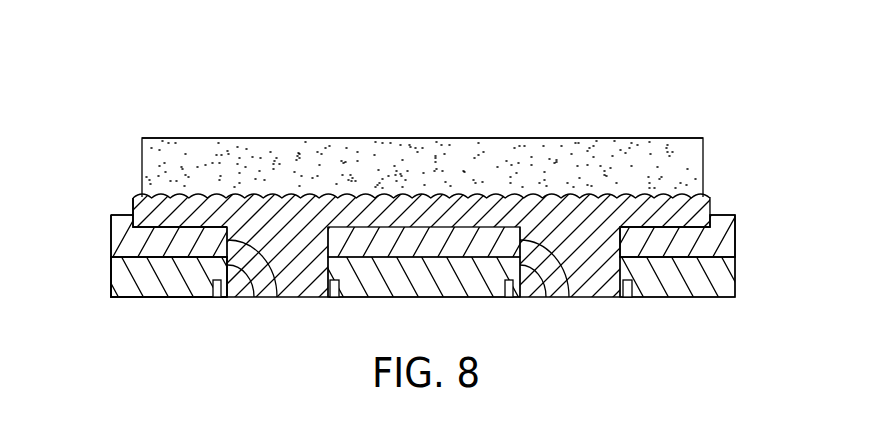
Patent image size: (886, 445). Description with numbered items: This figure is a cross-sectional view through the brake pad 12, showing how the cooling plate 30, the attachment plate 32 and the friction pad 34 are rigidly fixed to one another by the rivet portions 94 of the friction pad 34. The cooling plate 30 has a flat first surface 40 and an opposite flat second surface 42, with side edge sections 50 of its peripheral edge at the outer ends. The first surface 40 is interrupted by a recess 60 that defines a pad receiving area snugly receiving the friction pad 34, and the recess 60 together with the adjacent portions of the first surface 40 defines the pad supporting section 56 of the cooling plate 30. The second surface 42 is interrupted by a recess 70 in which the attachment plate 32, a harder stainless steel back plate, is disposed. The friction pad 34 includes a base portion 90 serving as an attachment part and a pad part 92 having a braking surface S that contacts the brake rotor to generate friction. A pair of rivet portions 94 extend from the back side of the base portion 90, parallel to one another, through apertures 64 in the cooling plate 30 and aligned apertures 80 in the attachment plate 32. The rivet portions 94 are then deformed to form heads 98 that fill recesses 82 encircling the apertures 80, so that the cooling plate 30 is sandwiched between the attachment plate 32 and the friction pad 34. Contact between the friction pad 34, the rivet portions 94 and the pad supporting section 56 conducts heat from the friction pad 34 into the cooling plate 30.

The brake pad 12 is at (185, 62).
The cooling plate 30 is at (721, 236).
The attachment plate 32 is at (697, 280).
The friction pad 34 is at (752, 100).
The first surface 40 is at (125, 215).
The second surface 42 is at (152, 260).
The recess 70 is at (169, 277).
The side edge sections 50 is at (111, 238).
The pad supporting section 56 is at (90, 265).
The recess 60 is at (143, 222).
The apertures 64 is at (277, 297).
The apertures 80 is at (253, 297).
The recesses 82 is at (225, 298).
The base portion 90 is at (702, 208).
The pad part 92 is at (667, 157).
The rivet portions 94 is at (297, 262).
The deformed heads 98 is at (624, 298).
The braking surface S is at (499, 138).